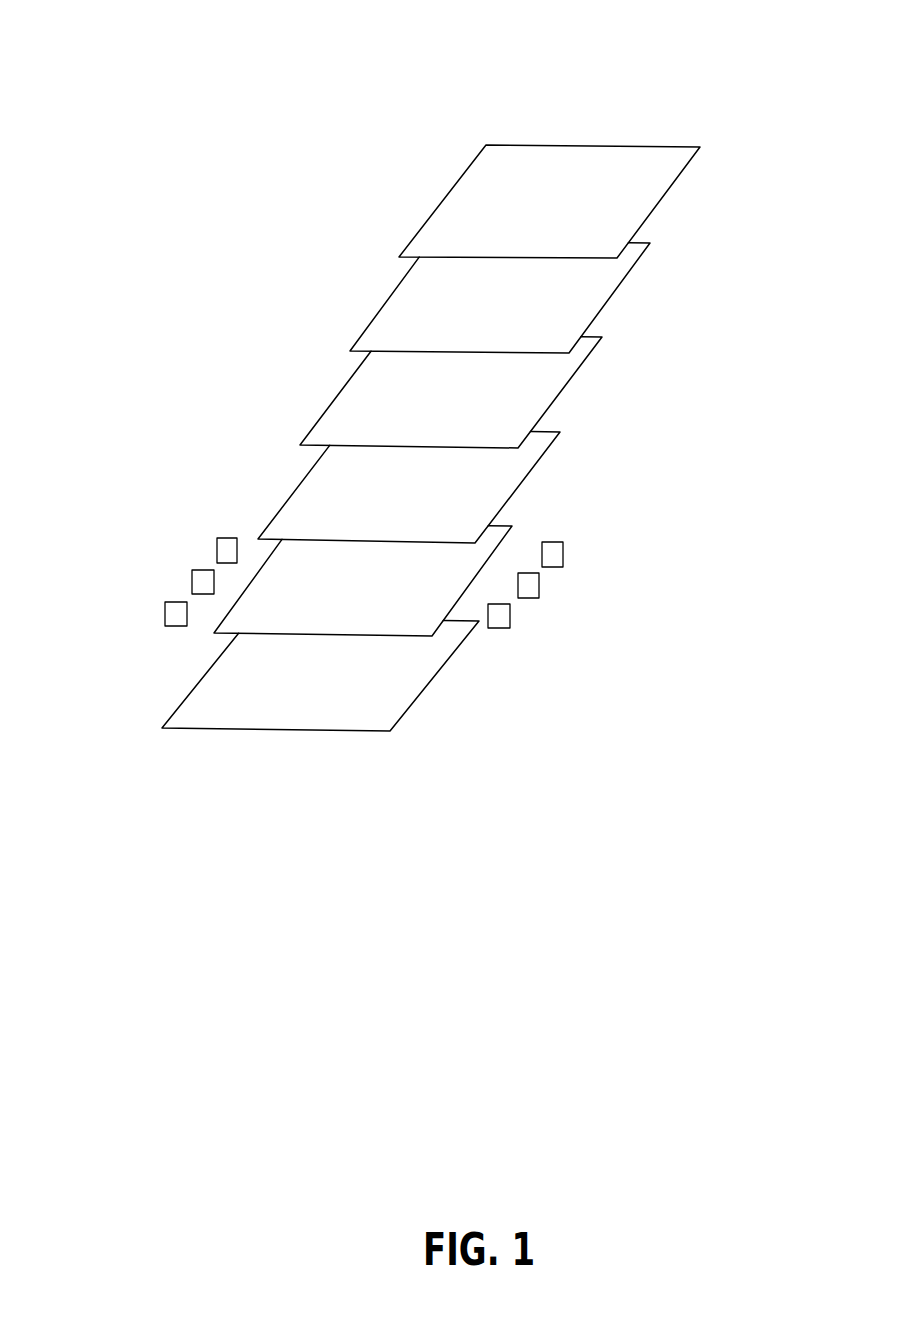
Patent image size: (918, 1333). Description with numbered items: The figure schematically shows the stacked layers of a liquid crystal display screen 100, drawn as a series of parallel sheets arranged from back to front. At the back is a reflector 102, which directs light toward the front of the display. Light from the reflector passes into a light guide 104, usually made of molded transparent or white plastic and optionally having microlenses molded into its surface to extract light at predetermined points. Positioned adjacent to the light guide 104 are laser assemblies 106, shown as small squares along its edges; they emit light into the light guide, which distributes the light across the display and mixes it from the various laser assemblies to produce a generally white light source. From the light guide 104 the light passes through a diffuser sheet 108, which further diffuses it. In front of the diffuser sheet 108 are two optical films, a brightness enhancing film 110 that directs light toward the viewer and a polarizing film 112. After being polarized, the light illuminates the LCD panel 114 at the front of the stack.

The liquid crystal display screen 100 is at (340, 52).
The reflector 102 is at (378, 707).
The light guide 104 is at (447, 585).
The laser assemblies 106 is at (227, 545).
The diffuser sheet 108 is at (487, 502).
The brightness enhancing film 110 is at (542, 398).
The polarizing film 112 is at (567, 298).
The LCD panel 114 is at (623, 212).